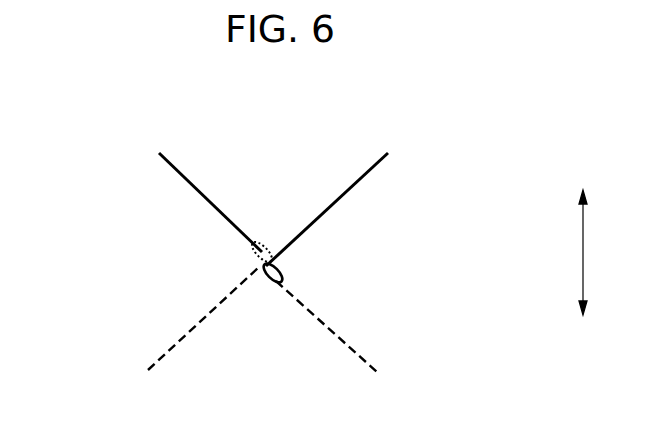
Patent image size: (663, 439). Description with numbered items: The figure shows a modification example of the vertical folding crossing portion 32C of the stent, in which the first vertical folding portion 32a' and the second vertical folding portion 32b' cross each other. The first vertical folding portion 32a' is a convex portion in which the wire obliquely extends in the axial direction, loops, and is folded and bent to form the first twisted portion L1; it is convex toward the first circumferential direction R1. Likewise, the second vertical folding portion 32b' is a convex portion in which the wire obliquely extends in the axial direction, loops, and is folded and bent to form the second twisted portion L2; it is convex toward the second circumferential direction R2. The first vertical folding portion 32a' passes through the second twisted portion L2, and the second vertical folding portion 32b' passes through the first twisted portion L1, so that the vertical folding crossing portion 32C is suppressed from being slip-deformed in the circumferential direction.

The vertical folding crossing portion 32C is at (139, 159).
The second vertical folding portion 32b' is at (368, 209).
The first vertical folding portion 32a' is at (206, 335).
The first twisted portion L1 is at (253, 255).
The second twisted portion L2 is at (281, 268).
The first circumferential direction R1 is at (583, 203).
The second circumferential direction R2 is at (584, 303).